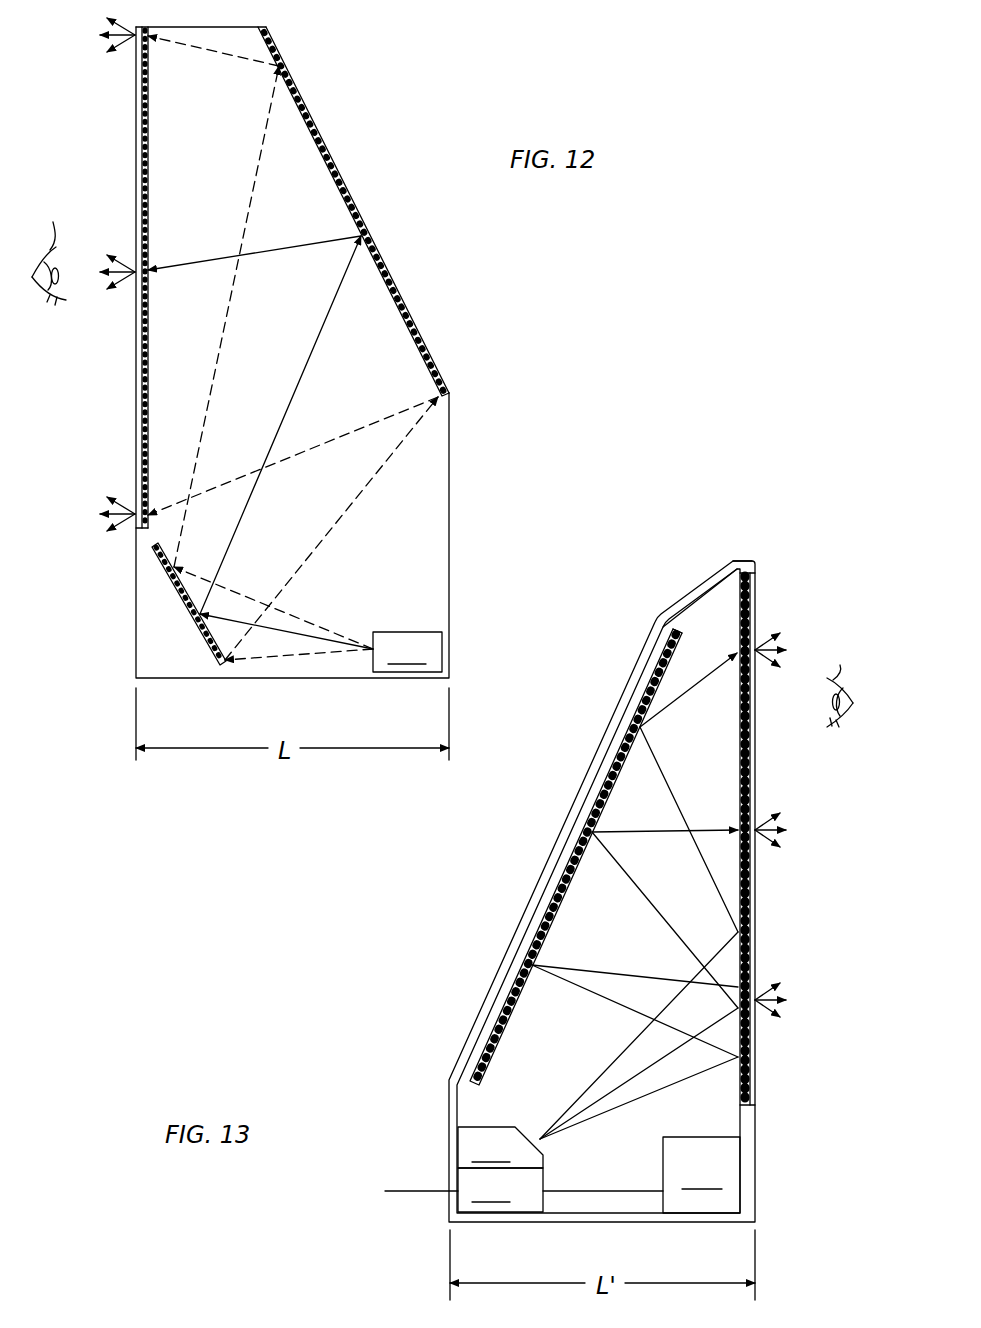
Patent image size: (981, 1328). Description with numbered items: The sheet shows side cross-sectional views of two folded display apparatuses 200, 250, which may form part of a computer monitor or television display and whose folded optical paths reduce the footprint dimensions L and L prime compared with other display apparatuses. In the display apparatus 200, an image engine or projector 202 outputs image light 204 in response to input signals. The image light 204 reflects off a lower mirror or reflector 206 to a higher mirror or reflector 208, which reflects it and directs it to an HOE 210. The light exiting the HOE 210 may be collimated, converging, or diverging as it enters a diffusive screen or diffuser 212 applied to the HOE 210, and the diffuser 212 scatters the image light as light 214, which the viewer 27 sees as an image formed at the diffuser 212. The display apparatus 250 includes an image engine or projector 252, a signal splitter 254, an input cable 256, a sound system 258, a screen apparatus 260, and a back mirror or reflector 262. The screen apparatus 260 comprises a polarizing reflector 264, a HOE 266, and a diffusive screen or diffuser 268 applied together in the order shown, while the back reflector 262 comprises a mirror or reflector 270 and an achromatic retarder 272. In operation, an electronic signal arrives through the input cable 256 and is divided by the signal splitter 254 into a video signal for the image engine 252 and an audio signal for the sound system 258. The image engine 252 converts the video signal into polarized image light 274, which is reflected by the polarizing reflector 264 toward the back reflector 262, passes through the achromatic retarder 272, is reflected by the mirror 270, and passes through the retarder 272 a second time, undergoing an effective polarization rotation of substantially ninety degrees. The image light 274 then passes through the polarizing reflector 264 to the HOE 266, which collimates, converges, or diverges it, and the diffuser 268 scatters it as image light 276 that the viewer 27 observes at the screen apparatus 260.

In FIG. 12, the display apparatus 200 is at (372, 163).
In FIG. 12, the image engine 202 is at (407, 652).
In FIG. 12, the image light 204 is at (350, 622).
In FIG. 12, the lower mirror 206 is at (193, 637).
In FIG. 12, the upper mirror 208 is at (412, 341).
In FIG. 12, the HOE 210 is at (150, 150).
In FIG. 12, the diffuser 212 is at (136, 165).
In FIG. 12, the scattered light 214 is at (132, 36).
In FIG. 12, the viewer 27 is at (47, 248).
In FIG. 13, the viewer 27 is at (841, 667).
In FIG. 13, the display apparatus 250 is at (580, 703).
In FIG. 13, the image engine 252 is at (500, 1147).
In FIG. 13, the signal splitter 254 is at (500, 1190).
In FIG. 13, the input cable 256 is at (501, 1170).
In FIG. 13, the sound system 258 is at (701, 1175).
In FIG. 13, the screen apparatus 260 is at (765, 925).
In FIG. 13, the back reflector 262 is at (565, 923).
In FIG. 13, the polarizing reflector 264 is at (740, 603).
In FIG. 13, the HOE 266 is at (760, 567).
In FIG. 13, the diffuser 268 is at (760, 612).
In FIG. 13, the mirror 270 is at (510, 1016).
In FIG. 13, the achromatic retarder 272 is at (672, 647).
In FIG. 13, the image light 274 is at (578, 1093).
In FIG. 13, the image light 276 is at (765, 665).